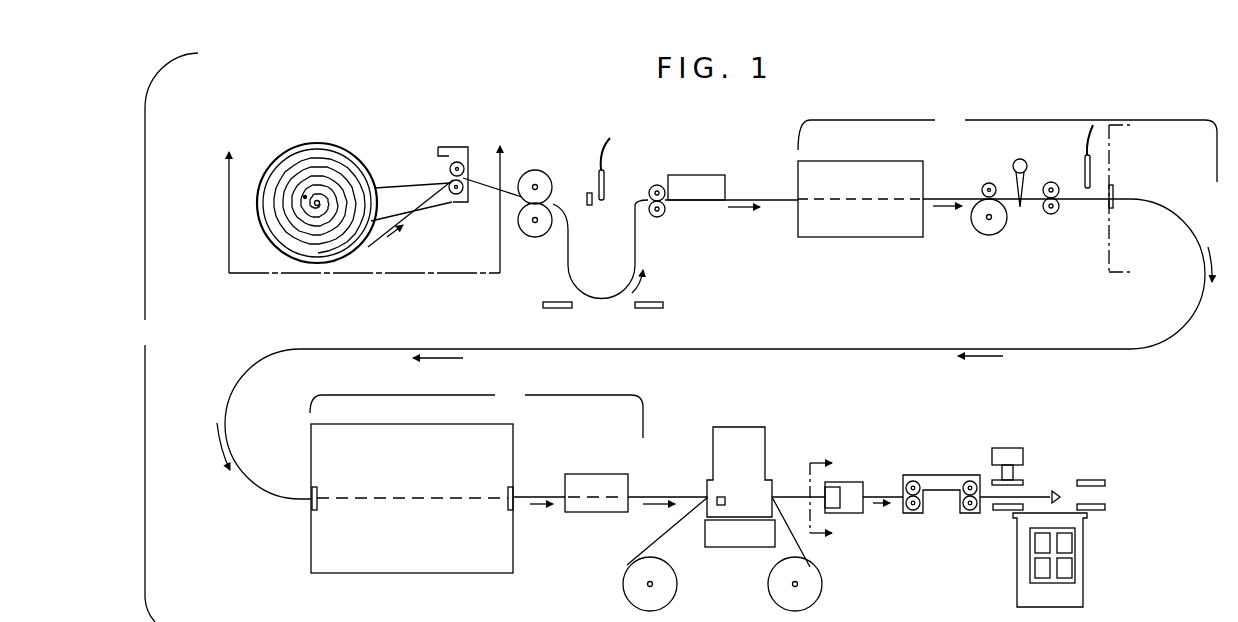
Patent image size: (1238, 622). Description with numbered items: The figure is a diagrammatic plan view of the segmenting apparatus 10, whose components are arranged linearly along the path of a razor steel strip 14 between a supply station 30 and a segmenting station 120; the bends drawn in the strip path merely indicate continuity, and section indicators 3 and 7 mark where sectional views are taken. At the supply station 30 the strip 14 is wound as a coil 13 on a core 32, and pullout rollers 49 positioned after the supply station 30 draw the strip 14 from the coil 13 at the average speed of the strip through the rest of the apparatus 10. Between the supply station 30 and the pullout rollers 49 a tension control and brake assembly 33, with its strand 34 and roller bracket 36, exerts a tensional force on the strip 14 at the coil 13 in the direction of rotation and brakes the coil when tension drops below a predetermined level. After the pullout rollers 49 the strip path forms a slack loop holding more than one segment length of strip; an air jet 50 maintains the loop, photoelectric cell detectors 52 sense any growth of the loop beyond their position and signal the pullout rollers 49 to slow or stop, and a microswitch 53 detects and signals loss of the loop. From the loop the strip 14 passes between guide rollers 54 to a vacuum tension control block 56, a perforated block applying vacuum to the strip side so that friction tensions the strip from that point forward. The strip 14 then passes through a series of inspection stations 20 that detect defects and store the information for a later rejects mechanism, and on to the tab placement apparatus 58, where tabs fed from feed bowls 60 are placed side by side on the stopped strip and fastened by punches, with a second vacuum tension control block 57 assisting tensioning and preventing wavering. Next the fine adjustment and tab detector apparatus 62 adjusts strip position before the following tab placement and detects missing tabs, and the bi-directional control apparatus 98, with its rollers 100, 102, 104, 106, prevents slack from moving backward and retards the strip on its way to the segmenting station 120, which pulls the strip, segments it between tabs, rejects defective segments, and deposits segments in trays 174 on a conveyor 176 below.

The segmenting apparatus 10 is at (674, 337).
The section line 3- 3 is at (362, 194).
The section line 7- 7 is at (829, 499).
The coil 13 is at (345, 165).
The strip 14 is at (748, 199).
The inspection stations 20 is at (763, 343).
The supply station 30 is at (320, 138).
The reel core 32 is at (306, 246).
The tension control and brake assembly 33 is at (447, 208).
The web strand 34 is at (404, 185).
The roller bracket 36 is at (467, 177).
The pullout rollers 49 is at (550, 200).
The jet 50 is at (606, 172).
The photoelectric cell detectors 52 is at (556, 309).
The microswitch 53 is at (589, 192).
The guide rollers 54 is at (647, 201).
The vacuum tension control block 56 is at (697, 183).
The vacuum tension control block 57 is at (724, 500).
The tab placement apparatus 58 is at (746, 463).
The feed bowls 60 is at (783, 577).
The fine adjustment and tab detector apparatus 62 is at (859, 479).
The bi-directional control apparatus 98 is at (940, 474).
The roller 100 is at (913, 481).
The roller 102 is at (913, 513).
The roller 104 is at (970, 481).
The roller 106 is at (970, 513).
The segmenting station 120 is at (1008, 515).
The trays 174 is at (1063, 545).
The conveyor 176 is at (1084, 585).